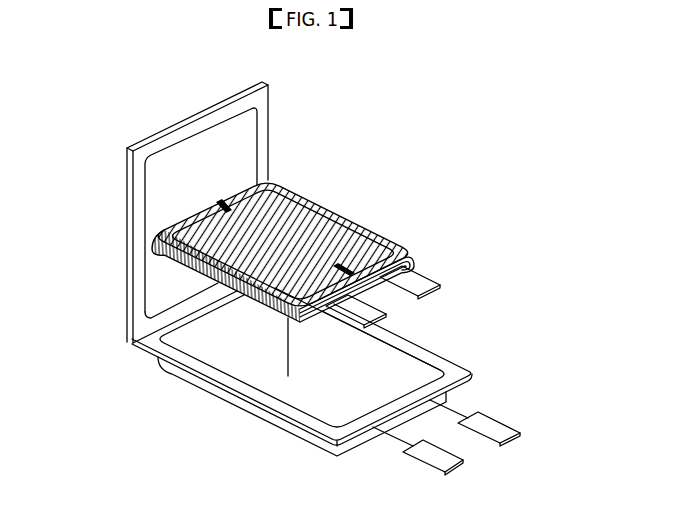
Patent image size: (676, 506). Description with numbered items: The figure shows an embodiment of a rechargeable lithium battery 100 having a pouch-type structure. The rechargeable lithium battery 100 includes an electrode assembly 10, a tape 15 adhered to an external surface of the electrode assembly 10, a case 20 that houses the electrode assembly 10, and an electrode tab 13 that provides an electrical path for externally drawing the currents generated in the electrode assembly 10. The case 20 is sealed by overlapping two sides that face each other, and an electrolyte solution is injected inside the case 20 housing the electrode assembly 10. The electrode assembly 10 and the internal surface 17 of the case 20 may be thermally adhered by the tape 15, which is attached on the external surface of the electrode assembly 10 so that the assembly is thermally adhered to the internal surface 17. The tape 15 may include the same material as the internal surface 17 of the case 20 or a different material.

The rechargeable lithium battery 100 is at (453, 131).
The electrode assembly 10 is at (264, 184).
The electrode tab 13 is at (464, 465).
The tape 15 is at (310, 220).
The internal surface 17 is at (196, 148).
The case 20 is at (140, 207).